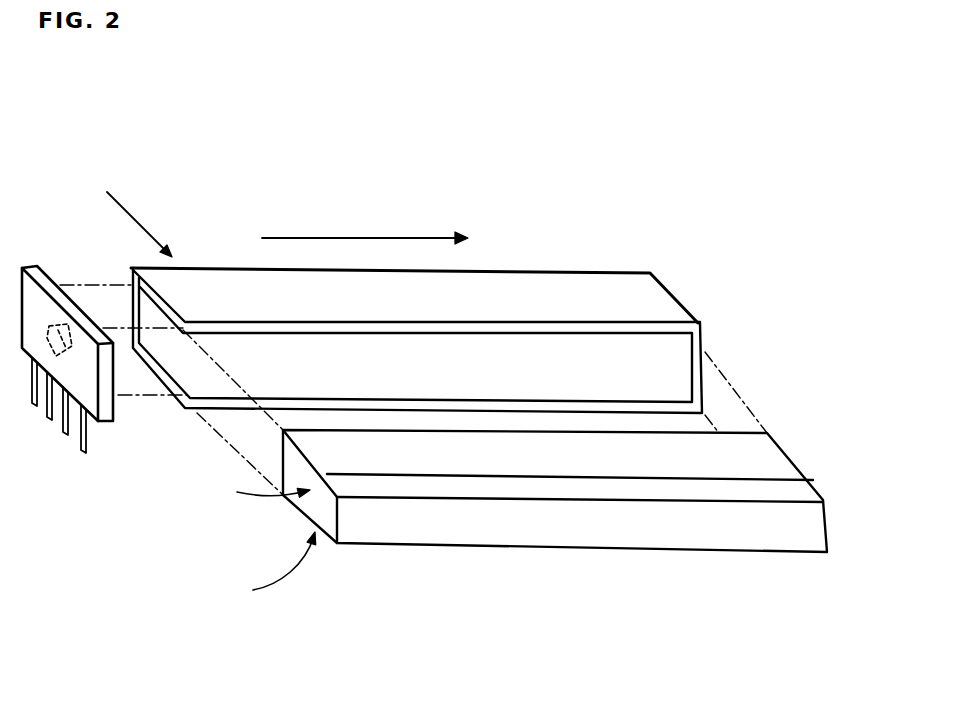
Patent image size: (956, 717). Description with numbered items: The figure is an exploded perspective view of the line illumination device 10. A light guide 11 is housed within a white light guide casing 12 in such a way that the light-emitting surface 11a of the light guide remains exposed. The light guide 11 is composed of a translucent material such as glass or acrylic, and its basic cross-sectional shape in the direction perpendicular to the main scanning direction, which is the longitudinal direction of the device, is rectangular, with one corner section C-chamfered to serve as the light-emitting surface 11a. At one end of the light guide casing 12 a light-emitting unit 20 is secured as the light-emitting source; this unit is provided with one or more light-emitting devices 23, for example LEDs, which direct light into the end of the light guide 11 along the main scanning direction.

The line illumination device 10 is at (682, 218).
The light guide 11 is at (450, 523).
The light-emitting surface 11a is at (560, 491).
The light guide casing 12 is at (565, 292).
The light-emitting unit 20 is at (105, 440).
The light-emitting device 23 is at (87, 300).